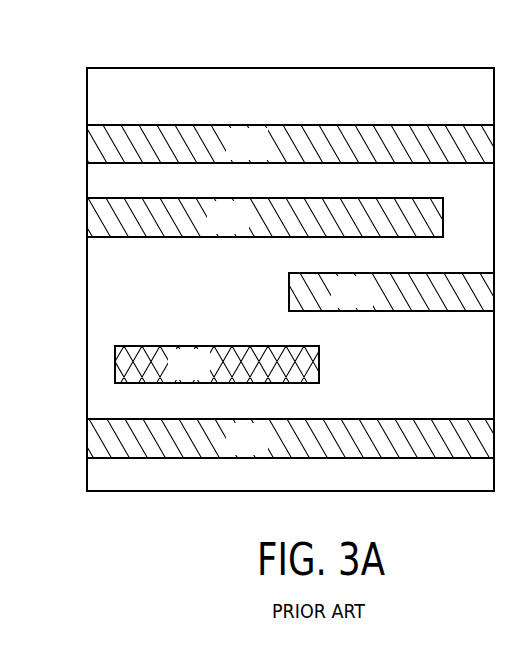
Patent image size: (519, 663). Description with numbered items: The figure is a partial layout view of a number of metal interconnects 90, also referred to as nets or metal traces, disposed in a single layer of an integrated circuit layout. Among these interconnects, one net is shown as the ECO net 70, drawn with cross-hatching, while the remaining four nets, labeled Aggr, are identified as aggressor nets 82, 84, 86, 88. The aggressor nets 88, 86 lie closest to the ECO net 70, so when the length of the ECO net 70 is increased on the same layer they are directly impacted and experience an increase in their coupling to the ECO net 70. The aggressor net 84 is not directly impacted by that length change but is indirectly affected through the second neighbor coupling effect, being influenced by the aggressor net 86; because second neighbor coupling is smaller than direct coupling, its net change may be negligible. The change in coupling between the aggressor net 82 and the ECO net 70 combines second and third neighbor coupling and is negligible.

The metal interconnects 90 is at (341, 68).
The aggressor net 82 is at (97, 143).
The aggressor net 84 is at (100, 216).
The aggressor net 86 is at (297, 296).
The ECO net 70 is at (125, 364).
The aggressor net 88 is at (97, 442).